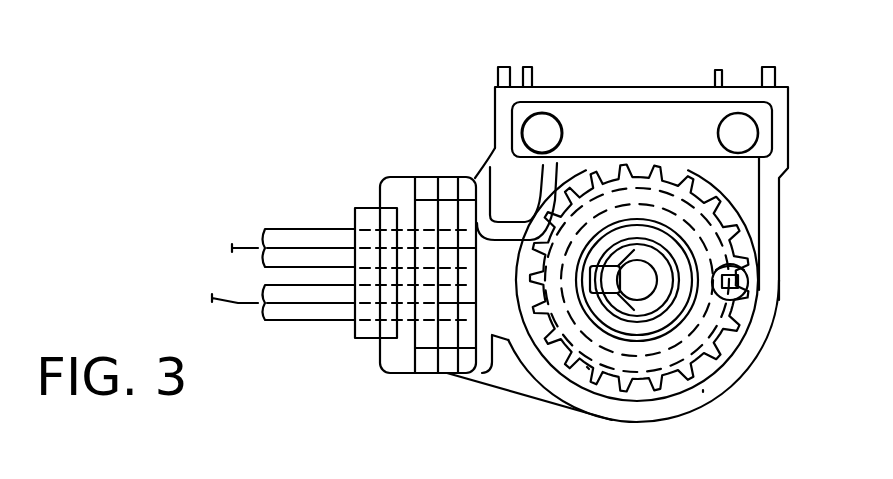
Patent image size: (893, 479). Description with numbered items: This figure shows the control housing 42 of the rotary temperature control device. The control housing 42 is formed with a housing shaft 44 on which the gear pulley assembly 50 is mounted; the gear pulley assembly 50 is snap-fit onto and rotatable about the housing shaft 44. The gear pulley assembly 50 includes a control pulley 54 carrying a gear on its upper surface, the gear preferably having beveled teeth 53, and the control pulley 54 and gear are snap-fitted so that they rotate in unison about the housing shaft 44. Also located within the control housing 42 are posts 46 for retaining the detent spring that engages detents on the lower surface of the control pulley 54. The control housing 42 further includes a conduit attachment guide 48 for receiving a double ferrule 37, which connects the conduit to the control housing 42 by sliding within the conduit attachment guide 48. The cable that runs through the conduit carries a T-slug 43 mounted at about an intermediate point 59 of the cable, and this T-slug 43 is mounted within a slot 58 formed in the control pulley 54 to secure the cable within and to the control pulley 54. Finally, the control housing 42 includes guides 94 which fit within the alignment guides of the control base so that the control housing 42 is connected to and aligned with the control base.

The double ferrule 37 is at (427, 222).
The control housing 42 is at (785, 225).
The T-slug 43 is at (745, 302).
The housing shaft 44 is at (648, 305).
The posts 46 is at (547, 122).
The conduit attachment guide 48 is at (385, 362).
The gear pulley assembly 50 is at (735, 352).
The beveled teeth 53 is at (587, 367).
The control pulley 54 is at (703, 390).
The slot 58 is at (732, 300).
The intermediate point 59 is at (730, 270).
The guides 94 is at (507, 67).